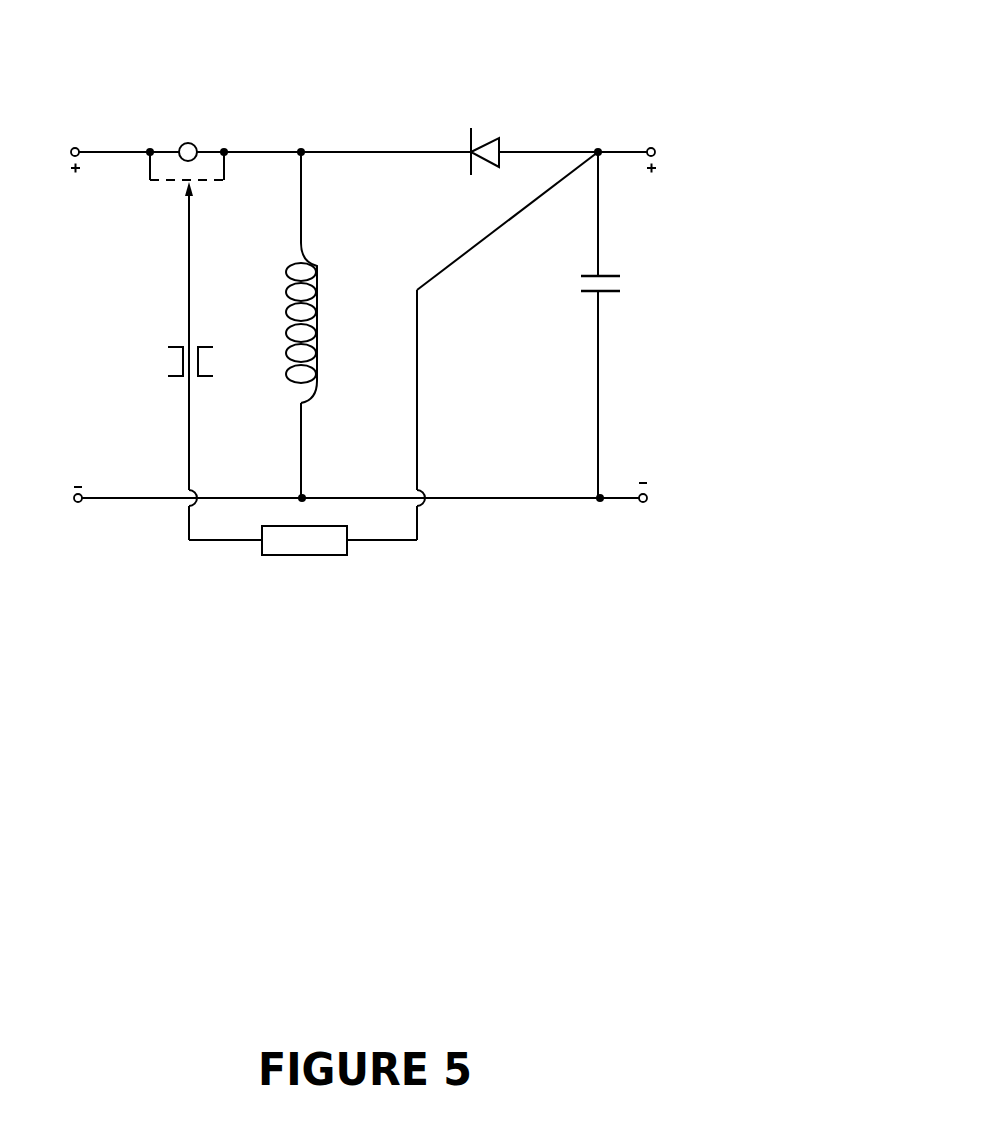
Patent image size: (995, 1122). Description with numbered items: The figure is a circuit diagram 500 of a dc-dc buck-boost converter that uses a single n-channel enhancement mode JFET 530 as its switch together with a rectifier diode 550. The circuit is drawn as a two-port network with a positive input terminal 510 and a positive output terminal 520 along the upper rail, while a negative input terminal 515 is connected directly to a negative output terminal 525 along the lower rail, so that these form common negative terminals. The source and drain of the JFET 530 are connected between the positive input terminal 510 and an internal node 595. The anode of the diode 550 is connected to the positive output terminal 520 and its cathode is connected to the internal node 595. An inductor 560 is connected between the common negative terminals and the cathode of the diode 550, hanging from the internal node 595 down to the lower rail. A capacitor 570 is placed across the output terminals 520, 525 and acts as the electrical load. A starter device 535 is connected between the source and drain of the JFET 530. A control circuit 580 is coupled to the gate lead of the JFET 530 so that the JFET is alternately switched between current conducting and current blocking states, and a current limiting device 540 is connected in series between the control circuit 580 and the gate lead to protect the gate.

The circuit diagram 500 is at (76, 31).
The positive input terminal 510 is at (67, 148).
The negative input terminal 515 is at (70, 500).
The positive output terminal 520 is at (660, 150).
The negative output terminal 525 is at (650, 497).
The n-channel enhancement mode JFET 530 is at (150, 186).
The starter device 535 is at (203, 143).
The current limiting device 540 is at (163, 375).
The rectifier diode 550 is at (502, 143).
The inductor 560 is at (318, 358).
The capacitor 570 is at (620, 283).
The control circuit 580 is at (321, 550).
The internal node 595 is at (302, 145).